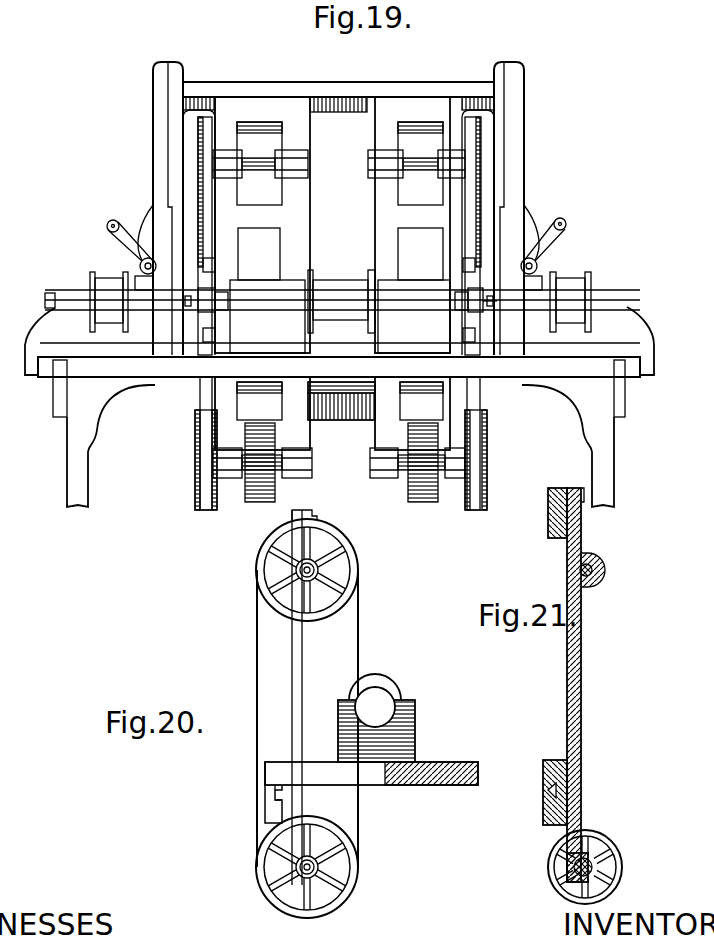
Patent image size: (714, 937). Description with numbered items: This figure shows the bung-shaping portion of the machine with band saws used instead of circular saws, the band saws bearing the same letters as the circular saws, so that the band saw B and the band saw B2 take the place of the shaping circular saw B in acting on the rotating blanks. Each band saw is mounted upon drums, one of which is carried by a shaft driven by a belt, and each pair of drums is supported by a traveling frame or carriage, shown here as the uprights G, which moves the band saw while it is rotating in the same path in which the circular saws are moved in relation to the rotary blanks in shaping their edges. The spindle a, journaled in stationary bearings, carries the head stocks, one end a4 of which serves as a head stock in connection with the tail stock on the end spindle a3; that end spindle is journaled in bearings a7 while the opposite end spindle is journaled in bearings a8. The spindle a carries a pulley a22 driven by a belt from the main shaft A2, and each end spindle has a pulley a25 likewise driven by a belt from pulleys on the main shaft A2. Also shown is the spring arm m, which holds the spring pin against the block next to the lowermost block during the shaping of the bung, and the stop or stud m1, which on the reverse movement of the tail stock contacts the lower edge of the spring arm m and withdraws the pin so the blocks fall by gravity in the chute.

In FIG. 19, the upright standard G is at (153, 150).
In FIG. 19, the circular saw B is at (206, 248).
In FIG. 19, the rack bar B2 is at (470, 244).
In FIG. 19, the spindle a is at (208, 300).
In FIG. 19, the end spindle a3 is at (50, 294).
In FIG. 19, the head stock end a4 is at (473, 300).
In FIG. 19, the bearings a7 is at (332, 341).
In FIG. 19, the bearings a8 is at (630, 341).
In FIG. 19, the pulley a22 is at (341, 301).
In FIG. 19, the pulley a25 is at (340, 302).
In FIG. 19, the spring m is at (548, 270).
In FIG. 19, the stop or stud m1 is at (572, 222).
In FIG. 19, the main shaft A2 is at (339, 366).
In FIG. 20, the main shaft A2 is at (436, 762).